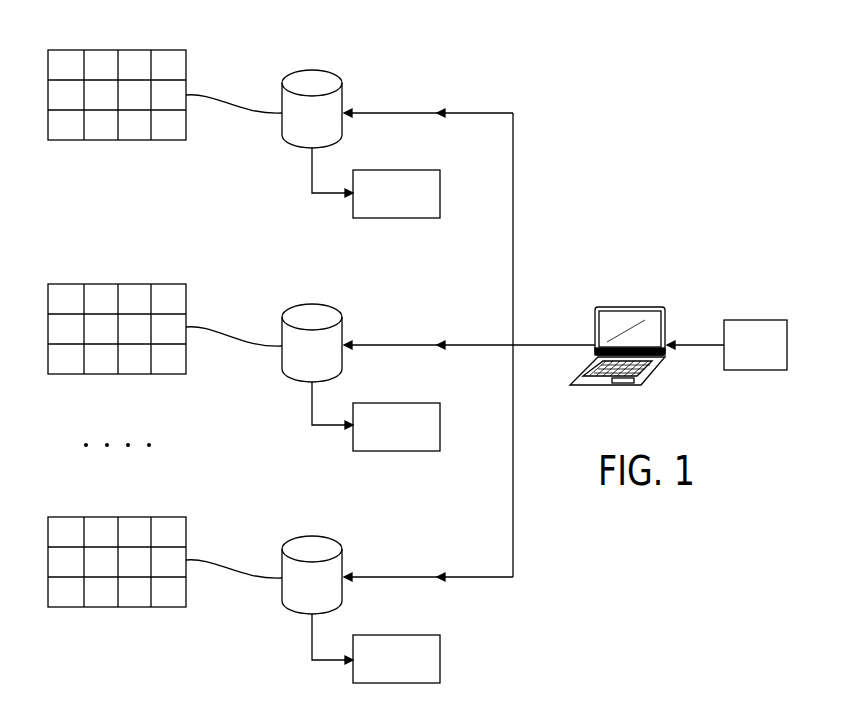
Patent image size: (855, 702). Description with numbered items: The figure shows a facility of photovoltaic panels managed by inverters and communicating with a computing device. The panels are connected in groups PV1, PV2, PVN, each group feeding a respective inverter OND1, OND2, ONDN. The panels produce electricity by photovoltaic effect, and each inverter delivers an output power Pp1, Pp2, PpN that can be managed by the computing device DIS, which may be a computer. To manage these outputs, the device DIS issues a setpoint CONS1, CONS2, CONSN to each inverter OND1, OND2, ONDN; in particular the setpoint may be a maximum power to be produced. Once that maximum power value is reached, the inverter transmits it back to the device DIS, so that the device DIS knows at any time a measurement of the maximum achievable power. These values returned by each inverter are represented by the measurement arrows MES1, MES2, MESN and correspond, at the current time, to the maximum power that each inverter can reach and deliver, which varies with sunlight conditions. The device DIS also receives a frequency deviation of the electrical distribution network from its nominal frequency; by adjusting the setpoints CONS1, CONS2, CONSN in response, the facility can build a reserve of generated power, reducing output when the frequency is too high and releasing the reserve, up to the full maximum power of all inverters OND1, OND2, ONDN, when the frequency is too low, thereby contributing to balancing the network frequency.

The first group of photovoltaic panels PV1 is at (67, 48).
The second group of photovoltaic panels PV2 is at (67, 283).
The N-th group of photovoltaic panels PVN is at (68, 608).
The first inverter OND1 is at (295, 70).
The second inverter OND2 is at (295, 304).
The N-th inverter ONDN is at (295, 536).
The first measurement MES1 is at (438, 112).
The second measurement MES2 is at (438, 344).
The N-th measurement MESN is at (438, 576).
The first setpoint CONS1 is at (347, 116).
The second setpoint CONS2 is at (347, 349).
The N-th setpoint CONSN is at (347, 581).
The power output from first inverter Pp1 is at (396, 194).
The power output from second inverter Pp2 is at (396, 427).
The power output from N-th inverter PpN is at (396, 659).
The computing device DIS is at (636, 300).